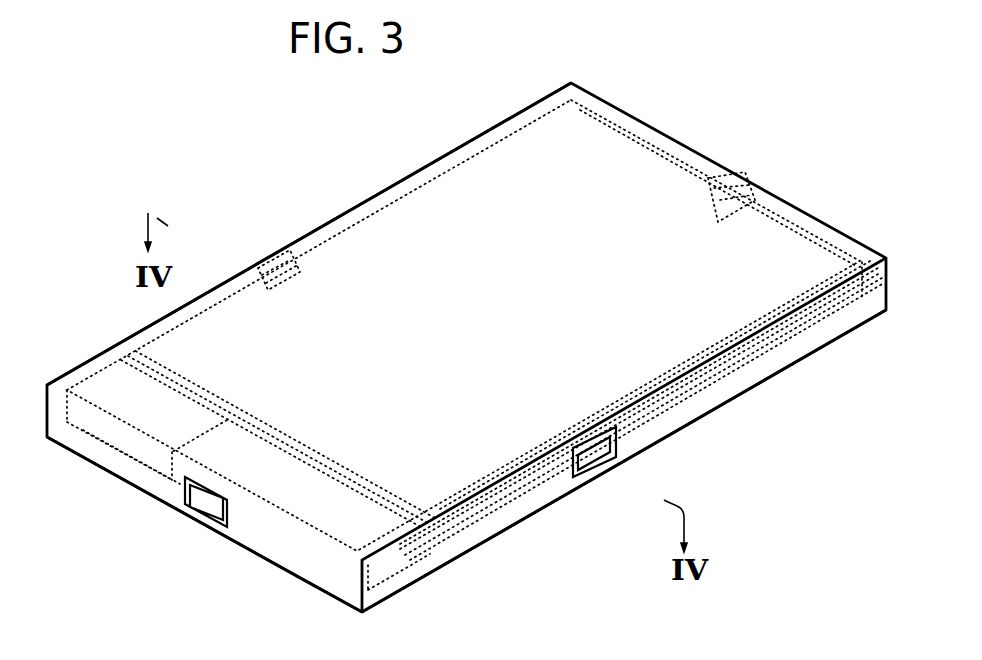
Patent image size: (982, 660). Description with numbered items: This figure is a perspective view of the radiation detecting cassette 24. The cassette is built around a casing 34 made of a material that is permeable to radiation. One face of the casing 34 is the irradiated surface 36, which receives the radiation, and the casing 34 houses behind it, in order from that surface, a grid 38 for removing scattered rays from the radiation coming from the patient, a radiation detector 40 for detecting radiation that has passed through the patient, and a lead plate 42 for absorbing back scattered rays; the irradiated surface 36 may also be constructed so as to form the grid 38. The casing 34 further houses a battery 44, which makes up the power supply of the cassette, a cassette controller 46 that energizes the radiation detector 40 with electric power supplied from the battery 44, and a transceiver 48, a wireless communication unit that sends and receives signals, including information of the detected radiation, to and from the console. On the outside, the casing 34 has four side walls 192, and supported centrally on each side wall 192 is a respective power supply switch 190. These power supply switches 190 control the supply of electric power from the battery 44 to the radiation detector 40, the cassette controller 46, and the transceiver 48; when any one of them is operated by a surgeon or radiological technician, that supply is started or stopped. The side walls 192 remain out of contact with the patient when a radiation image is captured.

The radiation detecting cassette 24 is at (336, 216).
The casing 34 is at (137, 329).
The irradiated surface 36 is at (688, 170).
The grid 38 is at (698, 414).
The radiation detector 40 is at (538, 512).
The lead plate 42 is at (506, 540).
The battery 44 is at (80, 457).
The cassette controller 46 is at (236, 546).
The transceiver 48 is at (300, 584).
The power supply switch 190 is at (262, 255).
The side wall 192 is at (393, 176).